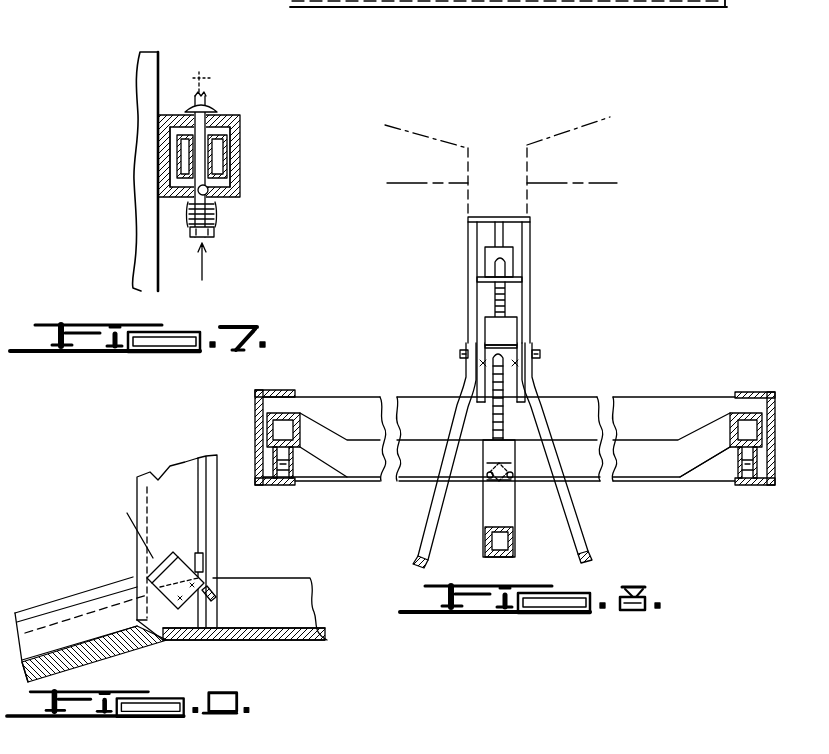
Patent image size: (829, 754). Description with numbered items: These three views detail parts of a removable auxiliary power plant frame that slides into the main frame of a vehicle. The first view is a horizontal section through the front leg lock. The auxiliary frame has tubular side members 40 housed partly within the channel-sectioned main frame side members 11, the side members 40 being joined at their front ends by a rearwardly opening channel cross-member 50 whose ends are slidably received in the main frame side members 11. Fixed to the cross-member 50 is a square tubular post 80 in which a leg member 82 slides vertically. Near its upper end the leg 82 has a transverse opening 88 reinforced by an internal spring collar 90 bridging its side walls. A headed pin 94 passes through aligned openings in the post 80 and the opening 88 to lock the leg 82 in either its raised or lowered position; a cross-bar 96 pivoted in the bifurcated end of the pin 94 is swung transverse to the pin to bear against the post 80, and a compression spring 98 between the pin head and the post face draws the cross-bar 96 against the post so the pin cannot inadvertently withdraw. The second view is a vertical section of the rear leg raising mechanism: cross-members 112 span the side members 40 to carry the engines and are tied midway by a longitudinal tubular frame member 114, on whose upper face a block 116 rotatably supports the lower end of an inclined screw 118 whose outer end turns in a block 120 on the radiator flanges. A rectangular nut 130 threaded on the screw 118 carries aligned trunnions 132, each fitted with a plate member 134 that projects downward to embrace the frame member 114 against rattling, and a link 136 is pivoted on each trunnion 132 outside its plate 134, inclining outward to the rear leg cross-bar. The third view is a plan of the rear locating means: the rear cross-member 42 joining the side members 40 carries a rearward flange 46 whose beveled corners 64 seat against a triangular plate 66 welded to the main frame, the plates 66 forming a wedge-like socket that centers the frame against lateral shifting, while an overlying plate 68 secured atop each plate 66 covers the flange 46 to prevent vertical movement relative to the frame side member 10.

In FIG. 8, the frame side member 10 is at (499, 439).
In FIG. 9, the frame side member 10 is at (199, 568).
In FIG. 8, the main frame side member 11 is at (441, 7).
In FIG. 9, the main frame side member 11 is at (127, 670).
In FIG. 8, the side member 40 is at (264, 430).
In FIG. 9, the side member 40 is at (65, 577).
In FIG. 9, the cross-member 42 is at (137, 478).
In FIG. 9, the flange 46 is at (165, 474).
In FIG. 7, the cross-member 50 is at (160, 59).
In FIG. 9, the beveled corner 64 is at (160, 620).
In FIG. 9, the triangular plate 66 is at (201, 573).
In FIG. 9, the plate 68 is at (190, 550).
In FIG. 7, the tubular post 80 is at (240, 128).
In FIG. 7, the leg member 82 is at (228, 161).
In FIG. 7, the transverse opening 88 is at (210, 197).
In FIG. 7, the spring collar 90 is at (177, 154).
In FIG. 7, the headed pin 94 is at (212, 243).
In FIG. 7, the cross-bar 96 is at (207, 104).
In FIG. 7, the compression spring 98 is at (216, 222).
In FIG. 8, the cross-member 112 is at (697, 463).
In FIG. 8, the auxiliary frame member 114 is at (505, 557).
In FIG. 8, the block 116 is at (501, 482).
In FIG. 8, the screw 118 is at (502, 433).
In FIG. 8, the block 120 is at (510, 262).
In FIG. 8, the nut 130 is at (508, 325).
In FIG. 8, the trunnion 132 is at (462, 353).
In FIG. 8, the plate member 134 is at (477, 380).
In FIG. 8, the link 136 is at (537, 412).